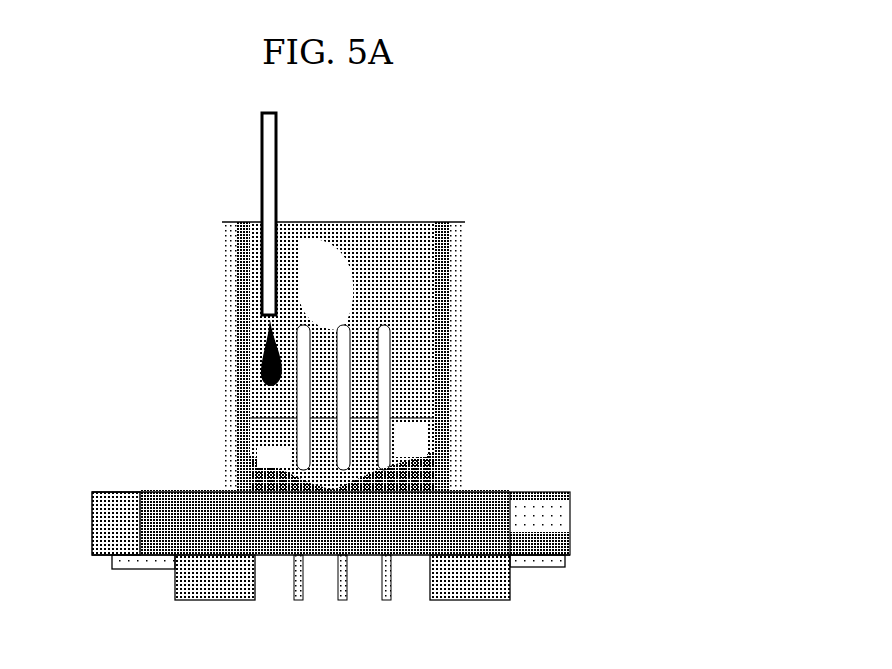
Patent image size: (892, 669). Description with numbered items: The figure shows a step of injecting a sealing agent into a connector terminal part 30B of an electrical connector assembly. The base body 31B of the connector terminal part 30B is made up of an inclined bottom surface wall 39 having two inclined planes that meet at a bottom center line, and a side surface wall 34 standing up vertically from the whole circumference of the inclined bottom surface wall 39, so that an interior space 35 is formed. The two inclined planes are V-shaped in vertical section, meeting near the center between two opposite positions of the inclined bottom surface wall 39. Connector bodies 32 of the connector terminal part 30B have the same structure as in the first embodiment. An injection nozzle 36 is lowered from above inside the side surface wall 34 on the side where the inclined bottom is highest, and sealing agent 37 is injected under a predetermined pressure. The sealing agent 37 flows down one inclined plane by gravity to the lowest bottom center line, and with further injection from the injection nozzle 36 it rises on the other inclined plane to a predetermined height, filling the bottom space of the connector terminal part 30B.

The connector terminal part 30B is at (175, 482).
The base body 31B is at (455, 492).
The connector bodies 32 is at (355, 330).
The side surface wall 34 is at (442, 320).
The interior space 35 is at (448, 242).
The injection nozzle 36 is at (262, 160).
The sealing agent 37 is at (268, 352).
The inclined bottom surface wall 39 is at (330, 470).